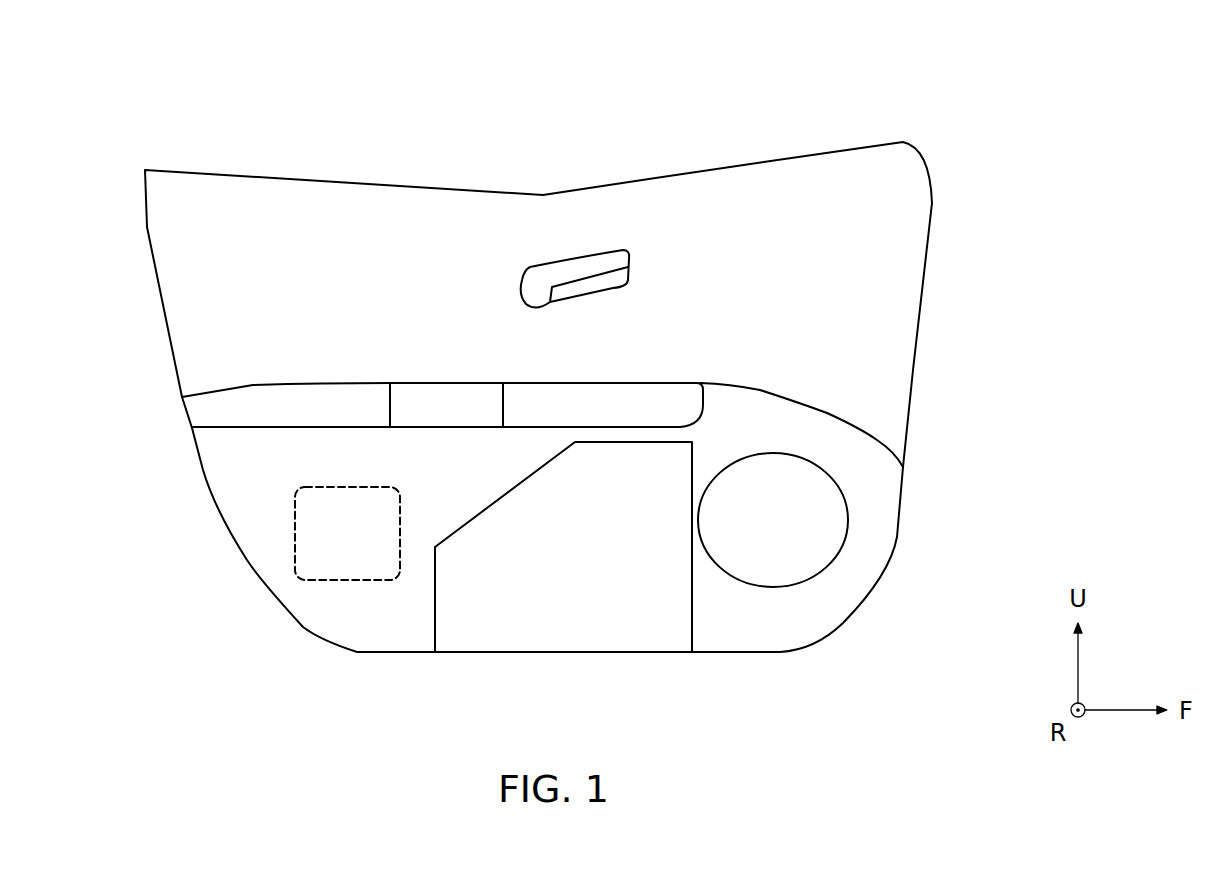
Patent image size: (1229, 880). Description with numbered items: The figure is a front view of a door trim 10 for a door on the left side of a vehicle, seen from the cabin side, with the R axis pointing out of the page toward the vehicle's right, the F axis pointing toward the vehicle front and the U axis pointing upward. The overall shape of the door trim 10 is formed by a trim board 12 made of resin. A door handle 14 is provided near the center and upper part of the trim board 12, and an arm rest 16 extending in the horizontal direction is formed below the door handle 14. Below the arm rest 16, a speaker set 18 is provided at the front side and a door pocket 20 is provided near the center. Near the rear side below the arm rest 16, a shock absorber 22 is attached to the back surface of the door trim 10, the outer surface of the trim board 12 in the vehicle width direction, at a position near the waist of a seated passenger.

The door trim 10 is at (842, 115).
The trim board 12 is at (733, 167).
The door handle 14 is at (565, 277).
The arm rest 16 is at (483, 383).
The speaker set 18 is at (842, 498).
The door pocket 20 is at (692, 623).
The shock absorber 22 is at (295, 550).